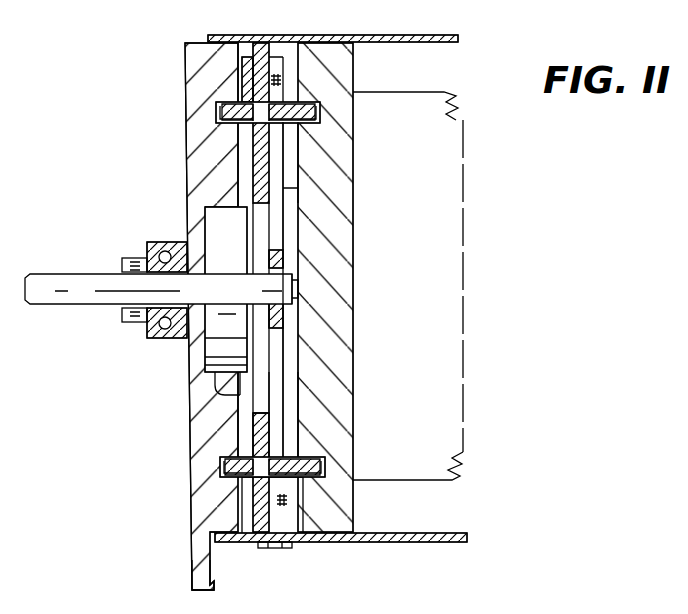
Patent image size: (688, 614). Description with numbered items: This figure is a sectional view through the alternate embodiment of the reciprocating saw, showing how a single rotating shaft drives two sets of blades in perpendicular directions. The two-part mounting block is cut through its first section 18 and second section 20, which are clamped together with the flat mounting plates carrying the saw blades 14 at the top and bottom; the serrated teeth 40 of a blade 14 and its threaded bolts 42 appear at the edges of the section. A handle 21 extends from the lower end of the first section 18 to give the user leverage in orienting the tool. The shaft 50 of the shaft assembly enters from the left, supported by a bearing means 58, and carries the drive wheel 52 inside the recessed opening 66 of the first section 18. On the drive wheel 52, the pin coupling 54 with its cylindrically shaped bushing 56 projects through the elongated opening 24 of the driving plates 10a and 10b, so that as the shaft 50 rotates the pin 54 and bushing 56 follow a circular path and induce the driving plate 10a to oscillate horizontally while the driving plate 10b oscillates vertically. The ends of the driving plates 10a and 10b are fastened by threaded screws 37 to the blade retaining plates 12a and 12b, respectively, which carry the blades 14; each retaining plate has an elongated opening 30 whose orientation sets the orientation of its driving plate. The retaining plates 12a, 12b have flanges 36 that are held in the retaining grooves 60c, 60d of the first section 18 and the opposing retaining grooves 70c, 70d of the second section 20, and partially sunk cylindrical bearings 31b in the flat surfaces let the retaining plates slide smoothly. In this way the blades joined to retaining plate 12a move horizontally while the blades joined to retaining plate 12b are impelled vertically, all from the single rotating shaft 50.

The driving plate 10a is at (246, 79).
The driving plate 10b is at (283, 320).
The blade retaining plate 12a is at (240, 50).
The blade retaining plate 12b is at (290, 404).
The saw blade 14 is at (420, 45).
The first section of mounting block 18 is at (192, 174).
The second section of mounting block 20 is at (323, 214).
The handle 21 is at (198, 570).
The elongated opening 24 is at (283, 366).
The elongated opening 30 is at (298, 140).
The partially sunk cylindrical bearing 31b is at (272, 46).
The flange 36 is at (222, 110).
The threaded screw 37 is at (286, 78).
The serrated teeth 40 is at (456, 108).
The threaded bolt 42 is at (272, 550).
The shaft 50 is at (50, 282).
The drive wheel 52 is at (205, 360).
The pin coupling 54 is at (295, 300).
The bushing 56 is at (300, 280).
The bearing means 58 is at (150, 244).
The retaining groove 60c is at (232, 130).
The retaining groove 60d is at (228, 462).
The recessed opening 66 is at (212, 388).
The retaining groove 70c is at (300, 135).
The retaining groove 70d is at (353, 474).